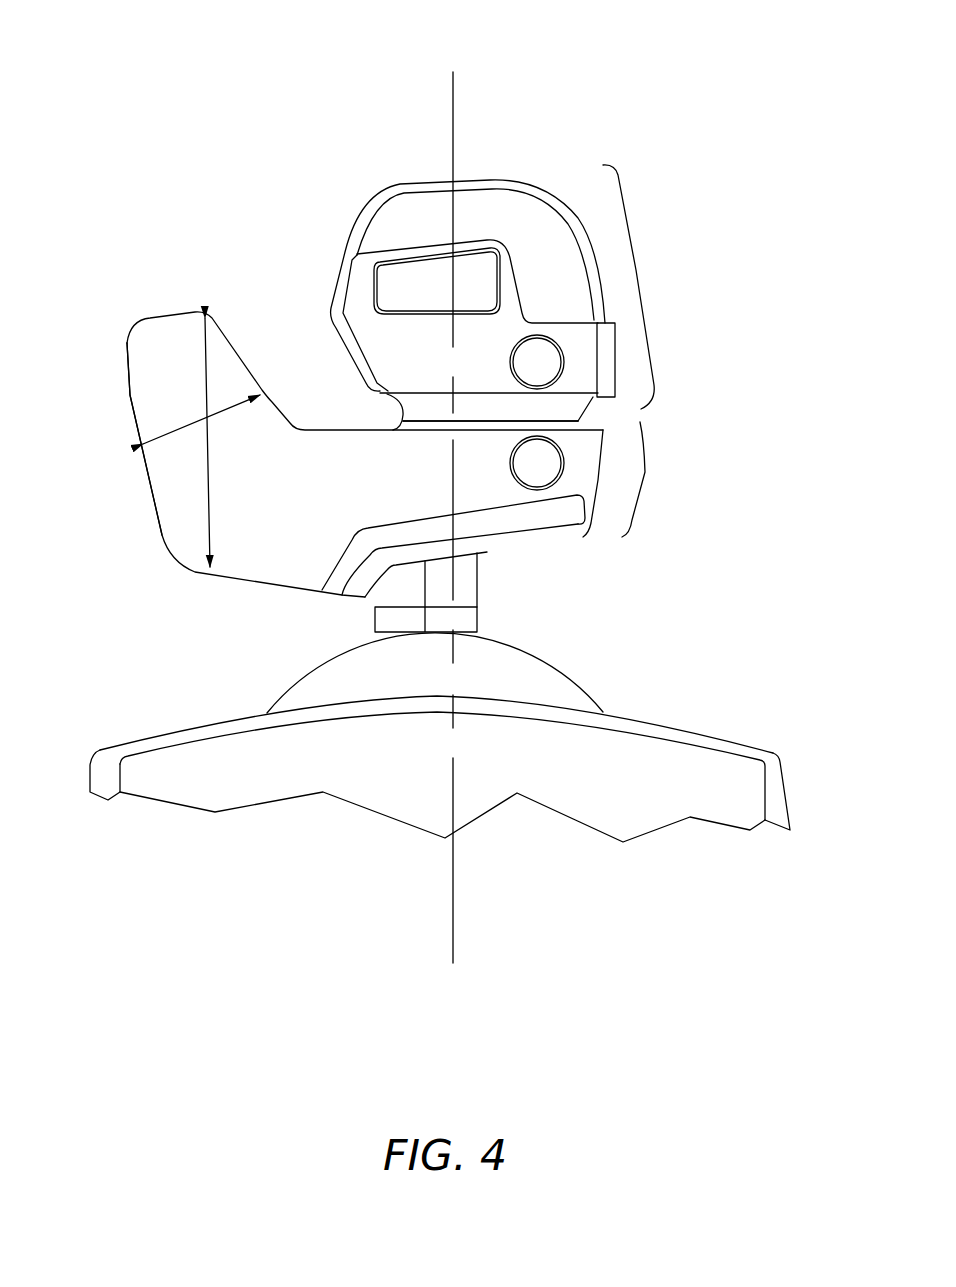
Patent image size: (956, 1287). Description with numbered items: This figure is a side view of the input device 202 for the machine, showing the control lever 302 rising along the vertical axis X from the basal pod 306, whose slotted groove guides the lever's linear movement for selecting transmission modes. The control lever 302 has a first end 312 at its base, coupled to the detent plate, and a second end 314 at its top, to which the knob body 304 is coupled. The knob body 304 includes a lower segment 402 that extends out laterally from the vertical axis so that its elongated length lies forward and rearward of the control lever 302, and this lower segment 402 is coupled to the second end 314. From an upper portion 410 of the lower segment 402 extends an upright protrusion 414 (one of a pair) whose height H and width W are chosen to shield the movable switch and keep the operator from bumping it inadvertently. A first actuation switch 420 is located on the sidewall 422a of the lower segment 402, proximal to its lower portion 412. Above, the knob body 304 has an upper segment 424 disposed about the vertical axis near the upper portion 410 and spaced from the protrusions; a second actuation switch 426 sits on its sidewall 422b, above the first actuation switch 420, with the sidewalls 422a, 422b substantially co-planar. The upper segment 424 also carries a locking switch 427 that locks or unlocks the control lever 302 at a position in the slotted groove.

The input device 202 is at (669, 68).
The knob body 304 is at (294, 221).
The control lever 302 is at (478, 582).
The basal pod 306 is at (777, 770).
The first end 312 is at (468, 598).
The second end 314 is at (468, 558).
The lower segment 402 is at (638, 482).
The upper portion 410 is at (598, 421).
The lower portion 412 is at (560, 507).
The upright protrusion 414 is at (125, 383).
The first actuation switch 420 is at (540, 460).
The sidewall of lower segment 422a is at (350, 504).
The sidewall of upper segment 422b is at (436, 360).
The upper segment 424 is at (638, 283).
The second actuation switch 426 is at (537, 360).
The locking switch 427 is at (420, 287).